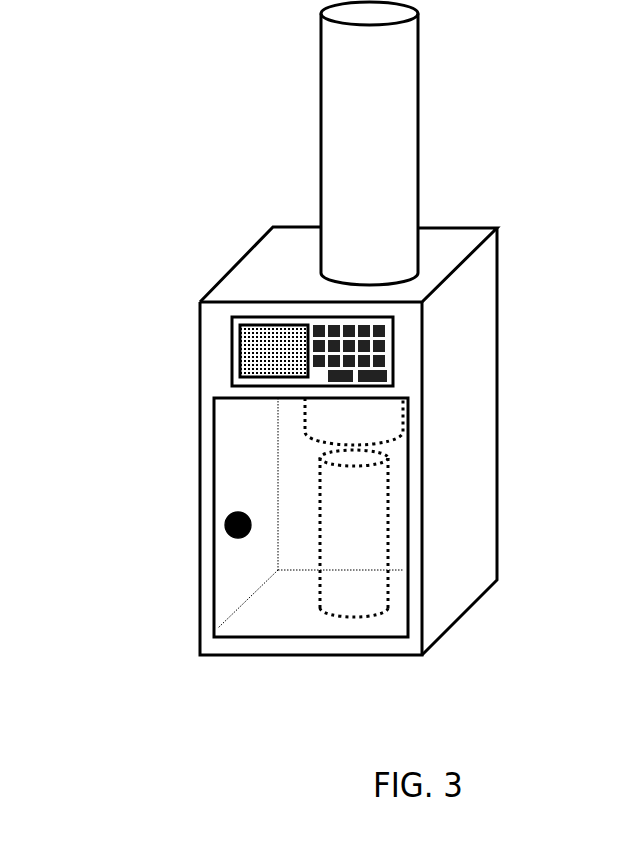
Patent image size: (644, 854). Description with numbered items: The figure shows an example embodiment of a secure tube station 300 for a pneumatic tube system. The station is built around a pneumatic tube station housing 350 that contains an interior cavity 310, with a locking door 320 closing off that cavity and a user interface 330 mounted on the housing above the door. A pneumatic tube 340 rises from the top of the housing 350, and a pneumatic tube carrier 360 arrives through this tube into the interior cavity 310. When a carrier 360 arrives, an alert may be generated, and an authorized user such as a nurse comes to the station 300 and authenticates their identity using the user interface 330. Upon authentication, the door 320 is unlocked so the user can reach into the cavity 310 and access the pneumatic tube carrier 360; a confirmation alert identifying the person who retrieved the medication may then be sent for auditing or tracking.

The secure tube station 300 is at (125, 112).
The interior cavity 310 is at (250, 468).
The locking door 320 is at (226, 519).
The user interface 330 is at (235, 338).
The pneumatic tube 340 is at (398, 162).
The pneumatic tube station housing 350 is at (458, 407).
The pneumatic tube carrier 360 is at (360, 525).